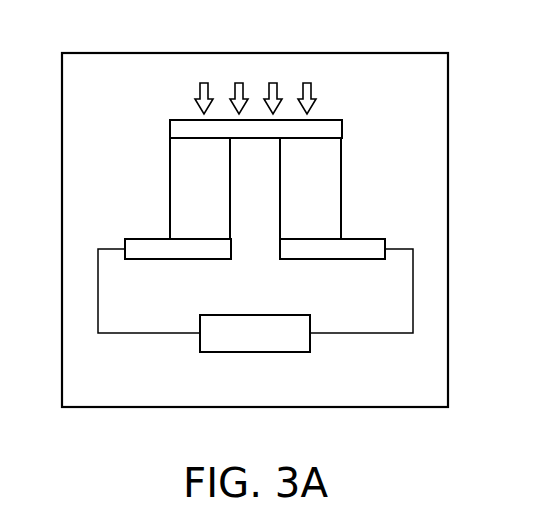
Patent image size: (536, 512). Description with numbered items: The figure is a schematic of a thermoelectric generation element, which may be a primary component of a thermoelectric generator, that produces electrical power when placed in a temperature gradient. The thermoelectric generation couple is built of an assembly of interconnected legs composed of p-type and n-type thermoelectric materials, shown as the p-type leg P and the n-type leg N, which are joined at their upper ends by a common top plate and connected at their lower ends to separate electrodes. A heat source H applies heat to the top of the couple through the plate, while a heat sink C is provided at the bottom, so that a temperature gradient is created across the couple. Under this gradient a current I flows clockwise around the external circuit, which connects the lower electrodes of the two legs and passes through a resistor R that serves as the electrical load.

The heat source H is at (255, 86).
The p-type leg P is at (200, 188).
The n-type leg N is at (310, 188).
The heat sink C is at (255, 263).
The resistor R is at (255, 333).
The current I is at (85, 262).